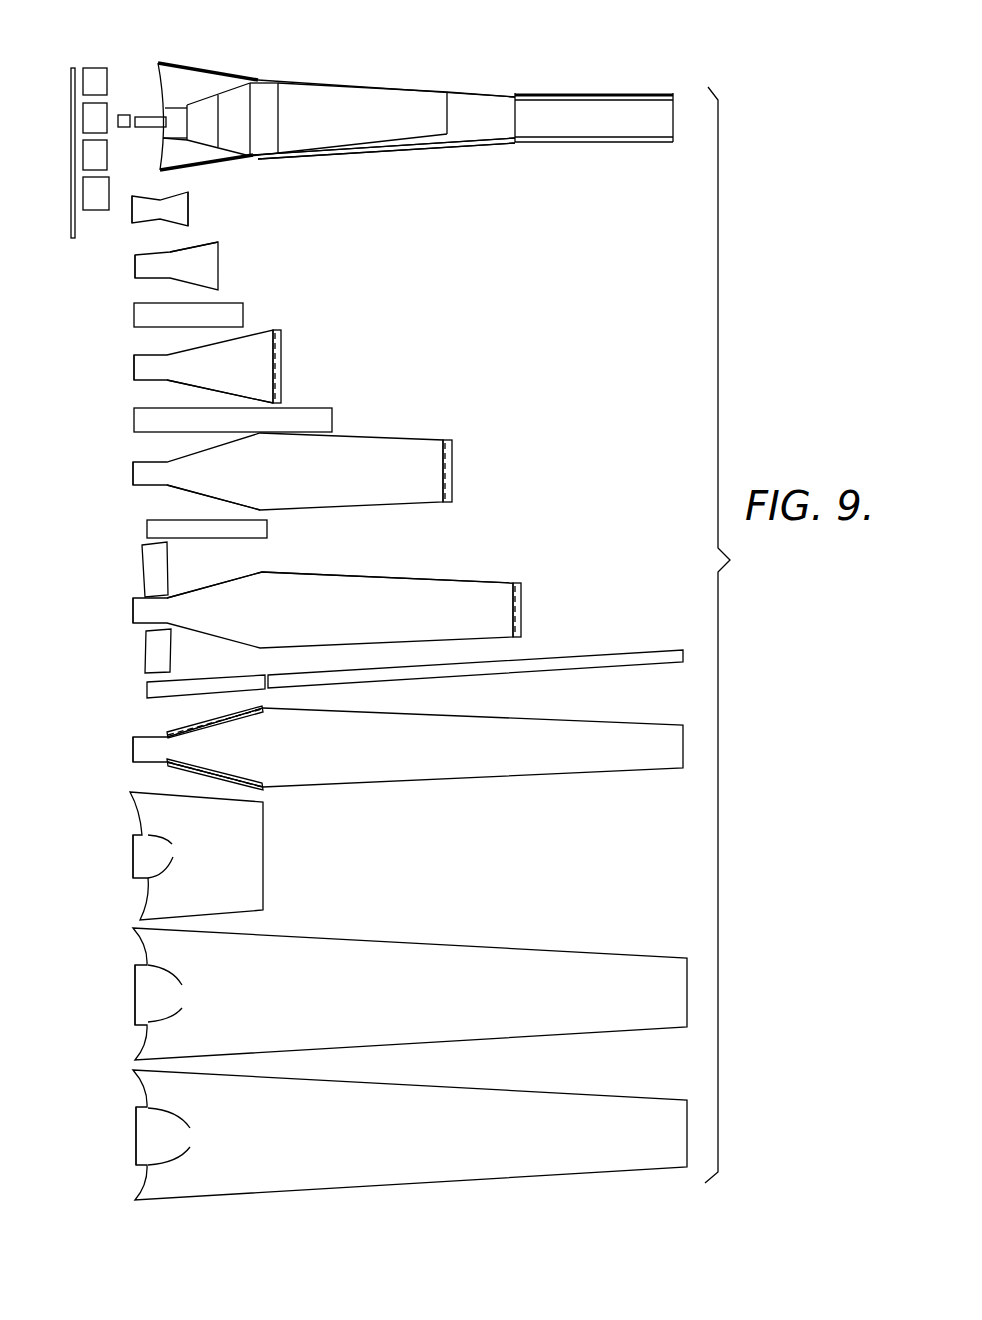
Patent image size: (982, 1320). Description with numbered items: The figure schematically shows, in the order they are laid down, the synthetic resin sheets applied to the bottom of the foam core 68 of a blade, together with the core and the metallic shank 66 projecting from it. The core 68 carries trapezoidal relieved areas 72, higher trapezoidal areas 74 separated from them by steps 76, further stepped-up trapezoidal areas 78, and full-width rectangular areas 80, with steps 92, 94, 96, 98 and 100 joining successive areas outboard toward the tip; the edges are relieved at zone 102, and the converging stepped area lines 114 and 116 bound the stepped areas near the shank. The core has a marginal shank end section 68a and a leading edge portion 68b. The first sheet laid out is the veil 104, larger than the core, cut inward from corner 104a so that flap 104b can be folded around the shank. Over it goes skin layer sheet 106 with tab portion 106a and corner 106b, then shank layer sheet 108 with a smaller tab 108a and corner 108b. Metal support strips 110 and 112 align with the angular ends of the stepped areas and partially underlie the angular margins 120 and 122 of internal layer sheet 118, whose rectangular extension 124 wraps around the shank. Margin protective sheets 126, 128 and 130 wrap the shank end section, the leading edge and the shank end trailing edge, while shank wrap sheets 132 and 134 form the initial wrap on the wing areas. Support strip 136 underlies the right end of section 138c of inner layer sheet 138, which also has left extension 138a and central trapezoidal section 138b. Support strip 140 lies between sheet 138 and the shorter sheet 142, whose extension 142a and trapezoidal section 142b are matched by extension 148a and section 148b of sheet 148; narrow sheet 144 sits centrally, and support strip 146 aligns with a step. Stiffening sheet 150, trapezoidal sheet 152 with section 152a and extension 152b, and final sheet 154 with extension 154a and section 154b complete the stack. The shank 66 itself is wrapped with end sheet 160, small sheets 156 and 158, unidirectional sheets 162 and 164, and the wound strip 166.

The shank 66 is at (147, 115).
The foam core 68 is at (393, 68).
The marginal shank end section 68a is at (247, 158).
The leading edge portion 68b is at (410, 150).
The trapezoidal relieved areas 72 is at (176, 92).
The trapezoidal areas 74 is at (203, 132).
The steps 76 is at (182, 115).
The trapezoidal areas 78 is at (238, 130).
The rectangular areas 80 is at (272, 100).
The steps 92 is at (217, 100).
The steps 94 is at (257, 95).
The steps 96 is at (280, 106).
The steps 98 is at (448, 107).
The steps 100 is at (515, 122).
The relieved zone 102 is at (345, 152).
The veil sheet 104 is at (588, 94).
The corner 104a is at (199, 1136).
The flap 104b is at (148, 1143).
The skin layer sheet 106 is at (517, 965).
The tab portion 106a is at (148, 978).
The corner 106b is at (194, 993).
The shank layer sheet 108 is at (255, 852).
The tab portion 108a is at (148, 852).
The corner 108b is at (189, 856).
The metal support strip 110 is at (200, 775).
The metal support strip 112 is at (190, 723).
The stepped area line 114 is at (217, 95).
The stepped area line 116 is at (182, 143).
The internal layer sheet 118 is at (530, 755).
The angular shank end margin 120 is at (230, 723).
The angular shank end margin 122 is at (223, 772).
The rectangular extension 124 is at (145, 752).
The margin protective skin sheet 126 is at (160, 689).
The margin protective skin sheet 128 is at (613, 653).
The margin protective skin sheet 130 is at (258, 528).
The shank wrap sheet 132 is at (145, 647).
The shank wrap sheet 134 is at (155, 577).
The metallic support strip 136 is at (522, 608).
The inner layer sheet 138 is at (468, 593).
The left extension 138a is at (148, 608).
The central trapezoidal section 138b is at (215, 597).
The larger trapezoidal section 138c is at (352, 593).
The metal support strip 140 is at (453, 478).
The unidirectional sheet 142 is at (393, 448).
The extension 142a is at (150, 470).
The trapezoidal section 142b is at (217, 473).
The rectangular sheet 144 is at (150, 420).
The metallic support strip 146 is at (282, 351).
The unidirectional sheet 148 is at (247, 348).
The rectangular extension 148a is at (145, 362).
The trapezoidal section 148b is at (228, 368).
The stiffening sheet 150 is at (140, 318).
The trapezoidal sheet 152 is at (212, 262).
The trapezoidal section 152a is at (193, 260).
The rectangular extension 152b is at (150, 268).
The final trapezoidal sheet 154 is at (140, 202).
The rectangular extension 154a is at (142, 212).
The trapezoidal section 154b is at (188, 208).
The small rectangular sheet 156 is at (98, 82).
The small rectangular sheet 158 is at (90, 118).
The end sheet 160 is at (118, 113).
The unidirectional sheet 162 is at (90, 150).
The unidirectional sheet 164 is at (90, 196).
The elongated strip 166 is at (70, 222).